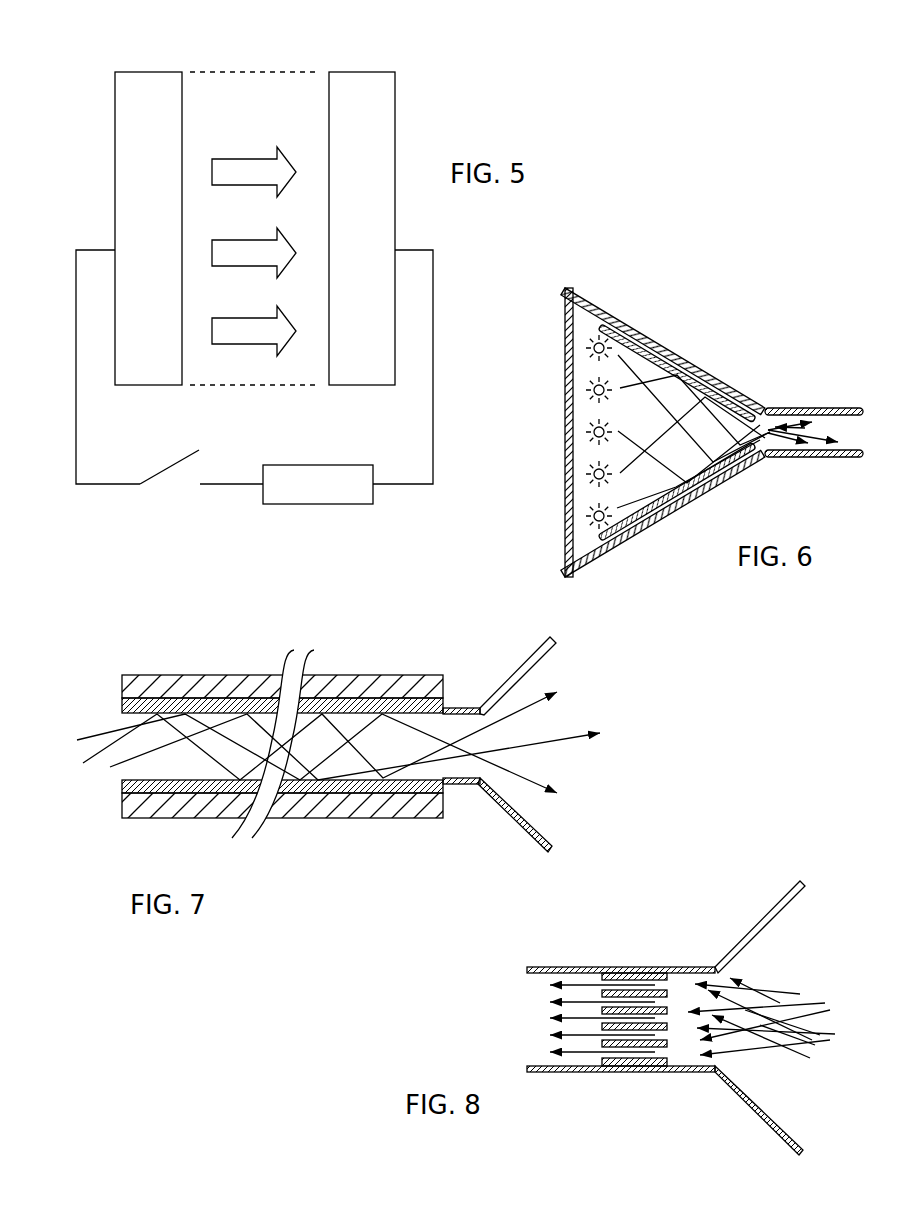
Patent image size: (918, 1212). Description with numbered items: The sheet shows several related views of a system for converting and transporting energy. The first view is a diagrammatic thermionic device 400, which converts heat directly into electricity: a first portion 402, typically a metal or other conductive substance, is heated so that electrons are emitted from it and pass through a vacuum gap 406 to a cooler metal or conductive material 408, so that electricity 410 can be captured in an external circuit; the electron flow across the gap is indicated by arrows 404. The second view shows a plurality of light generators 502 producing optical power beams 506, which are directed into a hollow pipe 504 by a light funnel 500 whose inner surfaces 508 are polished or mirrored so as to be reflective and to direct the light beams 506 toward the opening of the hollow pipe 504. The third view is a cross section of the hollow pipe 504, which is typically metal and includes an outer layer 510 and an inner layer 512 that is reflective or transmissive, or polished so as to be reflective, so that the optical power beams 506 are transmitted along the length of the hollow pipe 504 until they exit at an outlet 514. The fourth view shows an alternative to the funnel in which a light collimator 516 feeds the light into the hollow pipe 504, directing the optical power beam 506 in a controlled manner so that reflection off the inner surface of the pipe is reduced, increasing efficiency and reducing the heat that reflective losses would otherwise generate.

In FIG. 5, the thermionic device 400 is at (80, 70).
In FIG. 5, the first portion 402 is at (128, 80).
In FIG. 5, the electron flow 404 is at (288, 196).
In FIG. 5, the vacuum gap 406 is at (254, 199).
In FIG. 5, the cooler metal or conductive material 408 is at (391, 228).
In FIG. 5, the electricity 410 is at (282, 495).
In FIG. 6, the light funnel 500 is at (702, 307).
In FIG. 8, the light funnel 500 is at (758, 1015).
In FIG. 6, the light generators 502 is at (573, 394).
In FIG. 6, the hollow pipe 504 is at (814, 420).
In FIG. 7, the hollow pipe 504 is at (132, 637).
In FIG. 8, the hollow pipe 504 is at (621, 1037).
In FIG. 6, the optical power beams 506 is at (727, 478).
In FIG. 7, the optical power beams 506 is at (338, 776).
In FIG. 8, the optical power beams 506 is at (686, 996).
In FIG. 6, the inner surfaces 508 is at (687, 432).
In FIG. 7, the outer layer 510 is at (192, 685).
In FIG. 7, the inner layer 512 is at (282, 784).
In FIG. 7, the outlet 514 is at (499, 765).
In FIG. 8, the light collimator 516 is at (612, 1040).